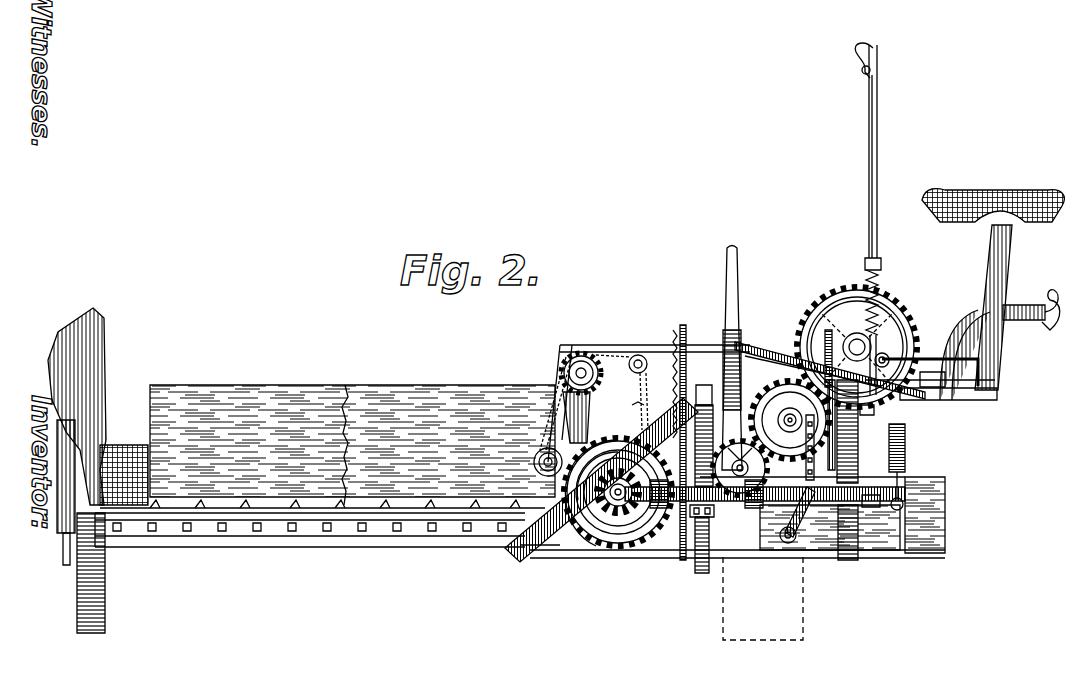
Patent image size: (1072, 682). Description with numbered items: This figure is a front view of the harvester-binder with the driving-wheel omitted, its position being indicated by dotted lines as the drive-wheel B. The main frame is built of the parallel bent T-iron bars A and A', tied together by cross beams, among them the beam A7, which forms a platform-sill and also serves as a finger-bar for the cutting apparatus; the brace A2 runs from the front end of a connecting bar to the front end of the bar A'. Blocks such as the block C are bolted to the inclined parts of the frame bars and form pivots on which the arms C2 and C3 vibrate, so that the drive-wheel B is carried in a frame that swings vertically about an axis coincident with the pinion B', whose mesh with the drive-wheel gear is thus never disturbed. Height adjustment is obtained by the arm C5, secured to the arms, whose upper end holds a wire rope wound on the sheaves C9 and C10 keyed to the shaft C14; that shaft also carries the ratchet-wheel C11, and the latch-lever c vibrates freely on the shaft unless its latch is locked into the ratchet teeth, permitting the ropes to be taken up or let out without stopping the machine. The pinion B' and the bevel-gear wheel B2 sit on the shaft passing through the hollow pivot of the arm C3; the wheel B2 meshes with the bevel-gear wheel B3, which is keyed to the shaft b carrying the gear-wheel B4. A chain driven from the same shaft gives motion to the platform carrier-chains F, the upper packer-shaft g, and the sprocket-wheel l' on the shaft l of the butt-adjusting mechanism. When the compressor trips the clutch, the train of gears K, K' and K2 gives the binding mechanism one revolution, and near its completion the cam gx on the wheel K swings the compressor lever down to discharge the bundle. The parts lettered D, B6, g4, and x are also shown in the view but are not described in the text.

The standard foot D is at (97, 573).
The platform carrier-chain F is at (322, 510).
The beam A7 is at (420, 534).
The brace A2 is at (516, 560).
The shaft b is at (540, 548).
The bevel-gear wheel B3 is at (603, 530).
The bevel-gear wheel B2 is at (632, 540).
The gear-wheel B4 is at (612, 525).
The shaft collar B6 is at (683, 540).
The frame bar A' is at (689, 554).
The vibrating arm C3 is at (702, 566).
The pinion B' is at (741, 532).
The drive-wheel B is at (763, 598).
The pivot block C is at (850, 513).
The frame bar A is at (810, 543).
The vibrating arm C2 is at (868, 505).
The sheave C9 is at (870, 420).
The ratchet-wheel C11 is at (897, 412).
The gear K' is at (790, 420).
The gear K2 is at (740, 468).
The cam and gear wheel K is at (857, 332).
The shaft C14 is at (772, 346).
The cam gx is at (886, 356).
The latch-lever c is at (879, 214).
The arm C5 is at (715, 332).
The sheave C10 is at (688, 352).
The upper packer-shaft g is at (584, 358).
The lower chain wheel g4 is at (562, 362).
The sprocket-wheel l' is at (639, 343).
The shaft l is at (622, 372).
The chain link x is at (635, 398).